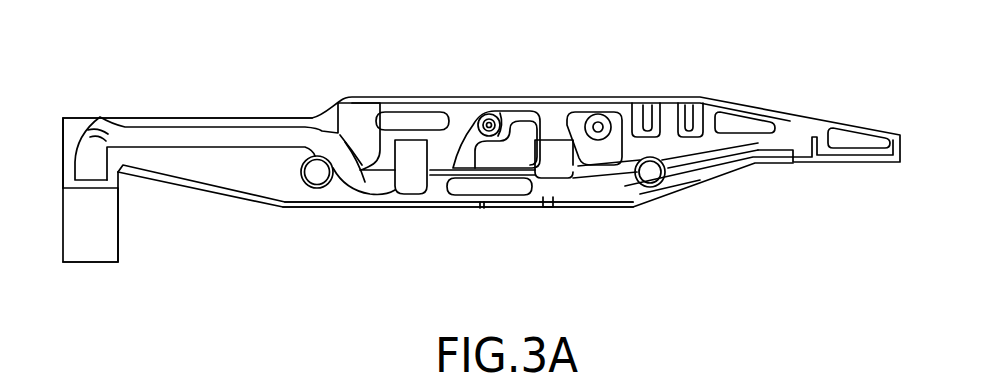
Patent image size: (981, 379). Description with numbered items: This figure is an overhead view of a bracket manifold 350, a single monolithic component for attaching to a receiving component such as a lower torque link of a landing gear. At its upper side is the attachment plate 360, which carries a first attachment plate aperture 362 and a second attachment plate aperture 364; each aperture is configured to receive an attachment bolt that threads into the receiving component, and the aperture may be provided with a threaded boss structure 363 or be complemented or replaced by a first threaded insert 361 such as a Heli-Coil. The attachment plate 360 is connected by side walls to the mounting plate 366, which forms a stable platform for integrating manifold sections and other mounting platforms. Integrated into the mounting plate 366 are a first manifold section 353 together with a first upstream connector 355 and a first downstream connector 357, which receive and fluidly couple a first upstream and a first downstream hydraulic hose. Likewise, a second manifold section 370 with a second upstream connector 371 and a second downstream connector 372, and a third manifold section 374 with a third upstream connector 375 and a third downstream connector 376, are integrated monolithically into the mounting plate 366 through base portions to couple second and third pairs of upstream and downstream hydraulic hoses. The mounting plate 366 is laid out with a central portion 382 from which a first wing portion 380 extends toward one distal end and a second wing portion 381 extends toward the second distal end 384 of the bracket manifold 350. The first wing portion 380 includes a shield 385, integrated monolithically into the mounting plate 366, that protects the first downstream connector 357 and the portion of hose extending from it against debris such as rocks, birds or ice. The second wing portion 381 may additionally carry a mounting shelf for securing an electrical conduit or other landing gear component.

The bracket manifold 350 is at (57, 67).
The first manifold section 353 is at (208, 133).
The first upstream connector 355 is at (345, 101).
The first downstream connector 357 is at (83, 160).
The attachment plate 360 is at (505, 115).
The first threaded insert 361 is at (483, 119).
The first attachment plate aperture 362 is at (487, 113).
The threaded boss structure 363 is at (497, 118).
The second attachment plate aperture 364 is at (600, 115).
The mounting plate 366 is at (387, 102).
The second manifold section 370 is at (363, 185).
The second upstream connector 371 is at (413, 172).
The second downstream connector 372 is at (313, 189).
The third manifold section 374 is at (602, 182).
The third upstream connector 375 is at (652, 186).
The third downstream connector 376 is at (557, 168).
The first wing portion 380 is at (176, 80).
The second wing portion 381 is at (790, 76).
The central portion 382 is at (110, 86).
The second distal end 384 is at (858, 77).
The shield 385 is at (105, 240).